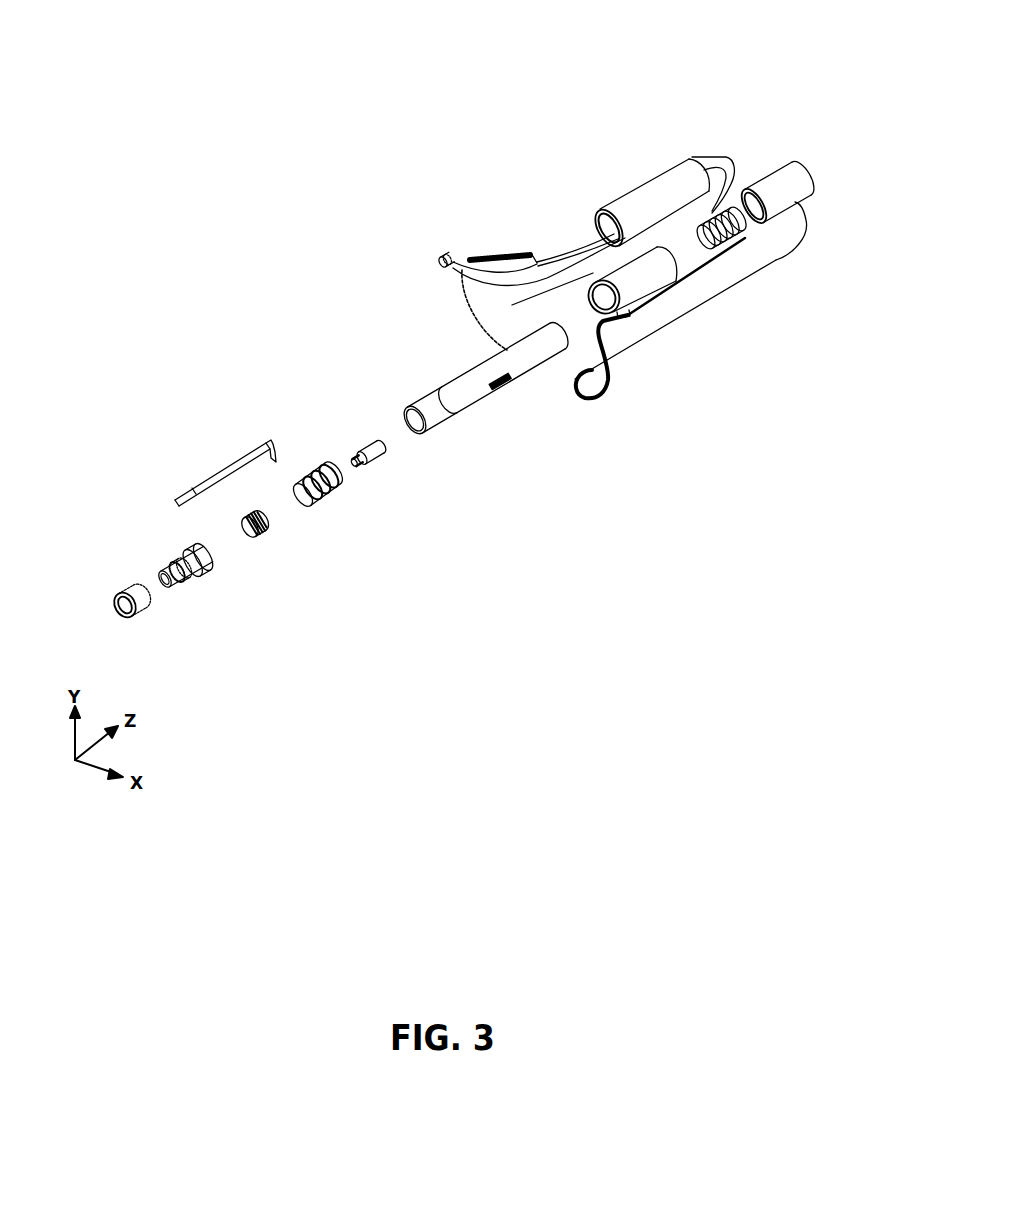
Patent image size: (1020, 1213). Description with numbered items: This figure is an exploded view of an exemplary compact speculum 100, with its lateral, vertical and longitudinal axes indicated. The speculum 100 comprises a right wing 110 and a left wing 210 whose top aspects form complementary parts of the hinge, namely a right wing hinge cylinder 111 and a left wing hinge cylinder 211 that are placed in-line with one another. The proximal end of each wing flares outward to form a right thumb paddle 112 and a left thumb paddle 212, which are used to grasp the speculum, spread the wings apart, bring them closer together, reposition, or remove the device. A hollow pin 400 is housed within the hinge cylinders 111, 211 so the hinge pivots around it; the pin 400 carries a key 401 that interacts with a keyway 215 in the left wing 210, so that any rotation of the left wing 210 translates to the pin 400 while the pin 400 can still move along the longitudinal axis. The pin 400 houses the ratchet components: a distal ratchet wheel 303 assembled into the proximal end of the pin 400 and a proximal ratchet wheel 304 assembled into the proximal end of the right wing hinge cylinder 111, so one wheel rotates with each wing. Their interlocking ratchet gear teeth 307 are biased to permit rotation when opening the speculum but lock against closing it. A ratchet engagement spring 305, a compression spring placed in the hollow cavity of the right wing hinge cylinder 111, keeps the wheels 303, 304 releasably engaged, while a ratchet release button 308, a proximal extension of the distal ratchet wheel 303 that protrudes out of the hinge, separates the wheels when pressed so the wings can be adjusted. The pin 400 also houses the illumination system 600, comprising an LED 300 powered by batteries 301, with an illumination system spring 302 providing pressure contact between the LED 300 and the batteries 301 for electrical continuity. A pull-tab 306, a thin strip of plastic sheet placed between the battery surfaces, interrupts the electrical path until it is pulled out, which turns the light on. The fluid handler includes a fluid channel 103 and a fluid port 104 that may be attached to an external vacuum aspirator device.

The speculum 100 is at (666, 78).
The fluid channel 103 is at (480, 281).
The fluid port 104 is at (441, 260).
The right wing 110 is at (713, 288).
The right wing hinge cylinder 111 is at (638, 297).
The right thumb paddle 112 is at (610, 382).
The left wing 210 is at (563, 253).
The left wing hinge cylinder 211 is at (660, 181).
The left thumb paddle 212 is at (477, 261).
The keyway 215 is at (600, 230).
The LED 300 is at (368, 441).
The batteries 301 is at (338, 492).
The illumination system spring 302 is at (263, 528).
The distal ratchet wheel 303 is at (190, 548).
The proximal ratchet wheel 304 is at (140, 617).
The ratchet engagement spring 305 is at (743, 228).
The pull-tab 306 is at (218, 473).
The ratchet gear teeth 307 is at (137, 590).
The ratchet release button 308 is at (162, 580).
The pin 400 is at (443, 400).
The key 401 is at (500, 383).
The illumination system 600 is at (409, 494).